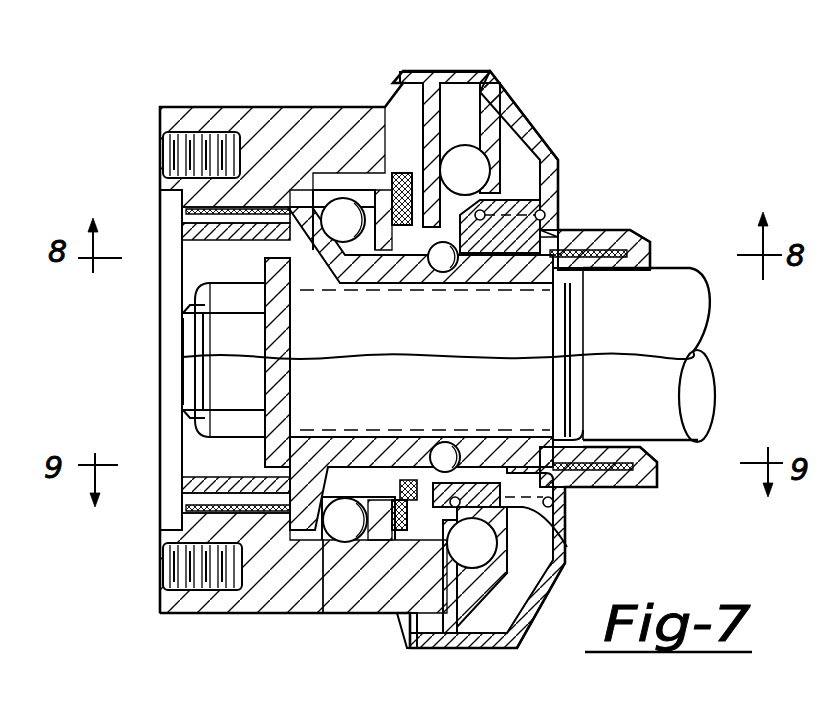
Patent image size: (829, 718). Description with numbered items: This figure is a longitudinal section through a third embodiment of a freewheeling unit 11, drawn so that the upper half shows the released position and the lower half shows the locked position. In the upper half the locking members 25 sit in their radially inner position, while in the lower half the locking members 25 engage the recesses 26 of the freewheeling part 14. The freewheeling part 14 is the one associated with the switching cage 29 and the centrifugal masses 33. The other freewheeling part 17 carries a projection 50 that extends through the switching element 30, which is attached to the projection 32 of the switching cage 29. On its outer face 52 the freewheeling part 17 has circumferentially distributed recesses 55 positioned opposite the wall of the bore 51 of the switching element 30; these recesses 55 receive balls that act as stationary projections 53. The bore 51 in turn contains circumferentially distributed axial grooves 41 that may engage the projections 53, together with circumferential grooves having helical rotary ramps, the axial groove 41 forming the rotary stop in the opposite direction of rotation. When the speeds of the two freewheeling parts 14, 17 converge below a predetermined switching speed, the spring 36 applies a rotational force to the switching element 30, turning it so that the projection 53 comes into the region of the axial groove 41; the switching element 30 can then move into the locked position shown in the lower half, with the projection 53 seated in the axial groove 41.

The coupling assembly 11 is at (138, 113).
The freewheeling part 14 is at (208, 128).
The freewheeling part 17 is at (263, 132).
The locking members 25 is at (297, 580).
The recesses 26 is at (383, 537).
The switching cage 29 is at (518, 118).
The switching element 30 is at (460, 160).
The projection of the switching cage 32 is at (468, 222).
The centrifugal masses 33 is at (503, 71).
The spring 36 is at (566, 542).
The axial grooves 41 is at (416, 470).
The projection 50 is at (386, 265).
The bore 51 is at (418, 260).
The outer face 52 is at (343, 240).
The stationary projections 53 is at (572, 490).
The recesses 55 is at (548, 217).